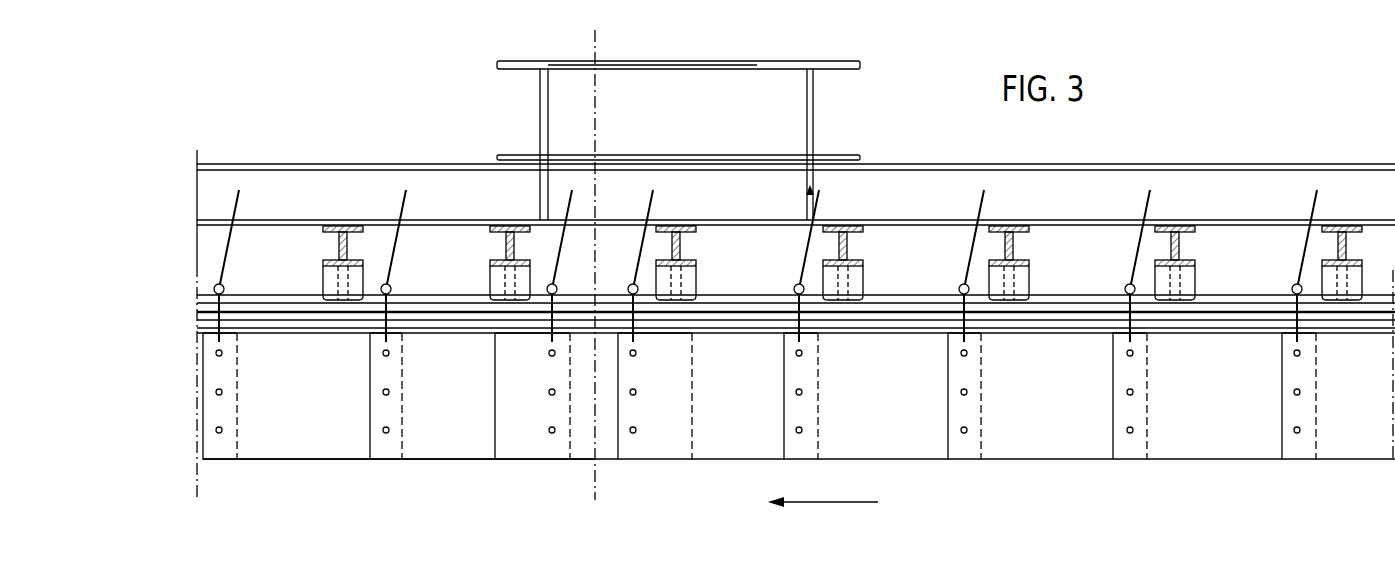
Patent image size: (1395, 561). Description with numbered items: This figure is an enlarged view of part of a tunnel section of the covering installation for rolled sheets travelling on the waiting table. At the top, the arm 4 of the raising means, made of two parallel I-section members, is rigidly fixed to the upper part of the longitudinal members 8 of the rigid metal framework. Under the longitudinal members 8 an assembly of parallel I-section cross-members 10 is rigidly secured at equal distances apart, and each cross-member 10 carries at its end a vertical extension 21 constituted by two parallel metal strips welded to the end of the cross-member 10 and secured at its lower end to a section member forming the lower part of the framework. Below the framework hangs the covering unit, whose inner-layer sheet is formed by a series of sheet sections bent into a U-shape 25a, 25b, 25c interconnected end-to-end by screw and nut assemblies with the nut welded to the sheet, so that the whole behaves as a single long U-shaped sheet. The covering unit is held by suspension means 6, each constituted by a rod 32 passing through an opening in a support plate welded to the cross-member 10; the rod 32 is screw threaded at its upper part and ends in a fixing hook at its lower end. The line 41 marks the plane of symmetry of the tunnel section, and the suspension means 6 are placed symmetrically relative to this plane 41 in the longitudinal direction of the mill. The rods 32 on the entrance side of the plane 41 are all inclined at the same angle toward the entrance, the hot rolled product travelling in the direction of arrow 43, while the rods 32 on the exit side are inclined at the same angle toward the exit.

The arm 4 is at (696, 72).
The longitudinal member 8 is at (401, 168).
The line of the plane of symmetry 41 is at (595, 48).
The suspension means 6 is at (983, 205).
The cross-member 10 is at (337, 246).
The vertical extension 21 is at (330, 281).
The rod 32 is at (796, 266).
The sheet section bent into a U-shape 25a is at (308, 443).
The sheet section bent into a U-shape 25b is at (448, 445).
The sheet section bent into a U-shape 25c is at (538, 442).
The arrow 43 is at (820, 501).